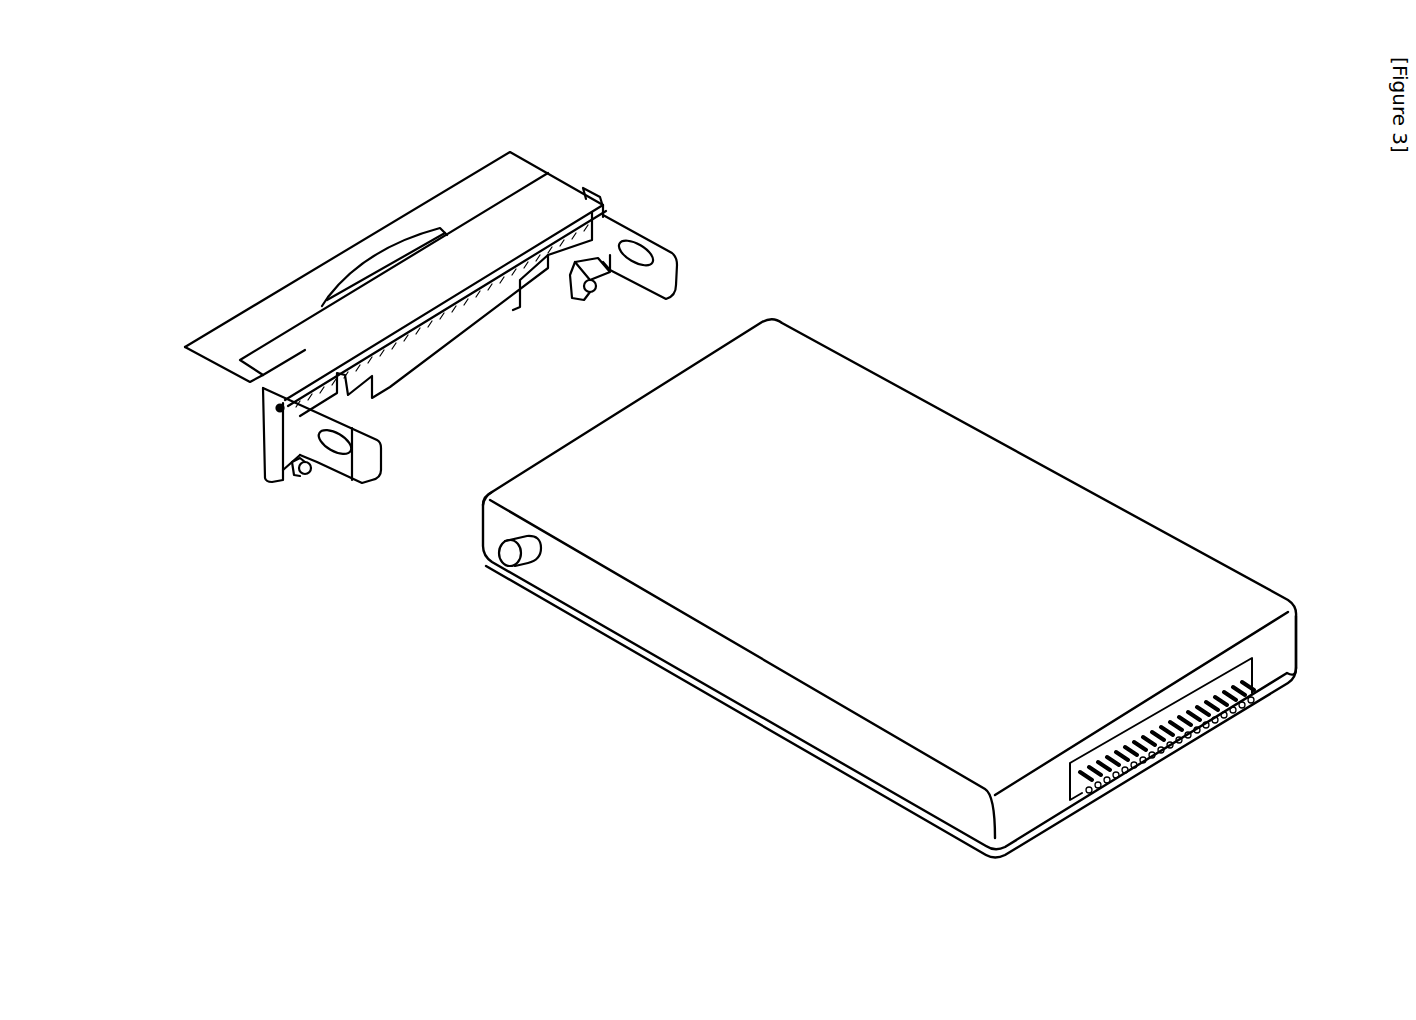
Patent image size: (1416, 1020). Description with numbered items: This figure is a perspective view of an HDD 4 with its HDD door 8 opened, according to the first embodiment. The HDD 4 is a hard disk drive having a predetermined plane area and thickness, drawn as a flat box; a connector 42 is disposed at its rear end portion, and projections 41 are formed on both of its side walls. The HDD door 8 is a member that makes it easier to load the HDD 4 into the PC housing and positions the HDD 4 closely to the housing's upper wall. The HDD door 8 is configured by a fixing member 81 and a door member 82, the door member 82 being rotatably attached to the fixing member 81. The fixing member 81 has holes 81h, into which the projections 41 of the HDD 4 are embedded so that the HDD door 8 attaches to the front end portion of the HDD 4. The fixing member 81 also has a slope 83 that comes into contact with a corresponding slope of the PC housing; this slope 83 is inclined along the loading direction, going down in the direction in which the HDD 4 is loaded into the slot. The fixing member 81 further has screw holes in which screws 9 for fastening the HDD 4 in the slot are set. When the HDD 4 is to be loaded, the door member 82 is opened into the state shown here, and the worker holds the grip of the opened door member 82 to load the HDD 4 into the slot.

The HDD 4 is at (682, 660).
The projections 41 is at (525, 563).
The connector 42 is at (1197, 738).
The HDD door 8 is at (388, 210).
The fixing member 81 is at (272, 449).
The holes 81h is at (350, 448).
The door member 82 is at (244, 333).
The slope 83 is at (312, 460).
The screws 9 is at (298, 472).